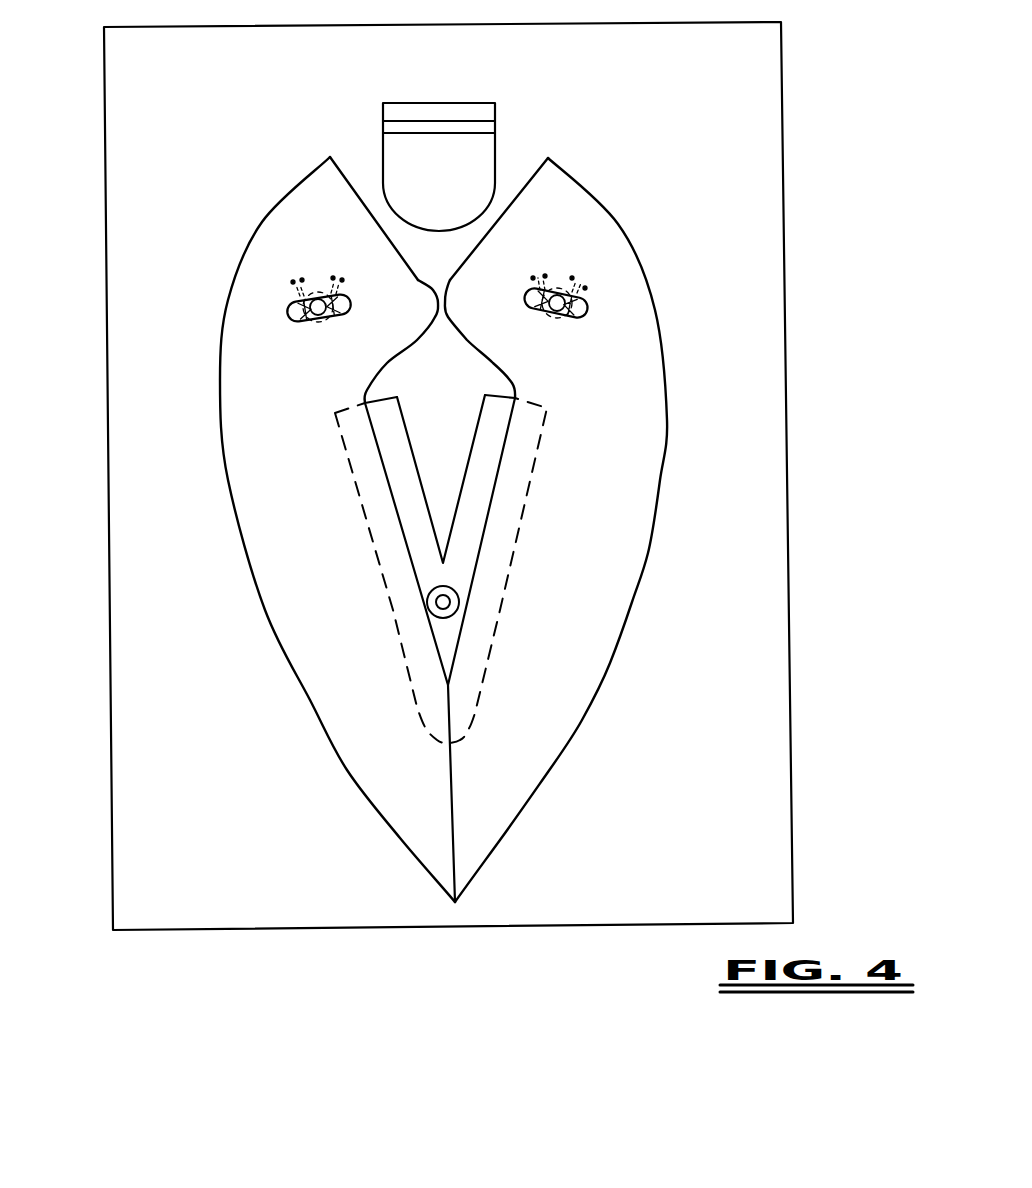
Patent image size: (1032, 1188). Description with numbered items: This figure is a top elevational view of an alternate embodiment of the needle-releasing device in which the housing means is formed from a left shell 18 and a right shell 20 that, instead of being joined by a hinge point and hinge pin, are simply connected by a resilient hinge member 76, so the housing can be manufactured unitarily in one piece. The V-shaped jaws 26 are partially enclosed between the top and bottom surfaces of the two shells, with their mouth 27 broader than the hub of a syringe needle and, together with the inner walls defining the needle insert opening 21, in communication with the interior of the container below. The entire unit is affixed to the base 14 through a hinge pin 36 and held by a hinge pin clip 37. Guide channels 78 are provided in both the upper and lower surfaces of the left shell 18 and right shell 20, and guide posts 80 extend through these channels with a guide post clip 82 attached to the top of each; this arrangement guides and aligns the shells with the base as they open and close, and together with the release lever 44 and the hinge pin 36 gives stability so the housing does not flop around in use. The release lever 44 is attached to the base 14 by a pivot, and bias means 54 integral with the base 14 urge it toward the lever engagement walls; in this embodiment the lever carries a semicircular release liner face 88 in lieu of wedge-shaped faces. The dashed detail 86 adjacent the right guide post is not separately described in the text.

The base 14 is at (133, 63).
The bias means 54 is at (428, 110).
The release lever 44 is at (518, 115).
The semicircular release liner face 88 is at (427, 195).
The left shell 18 is at (365, 760).
The right shell 20 is at (498, 820).
The needle insert opening 21 is at (438, 386).
The jaws 26 is at (462, 555).
The mouth 27 is at (442, 469).
The hinge pin 36 is at (450, 602).
The hinge pin clip 37 is at (448, 613).
The resilient hinge member 76 is at (450, 767).
The guide posts 80 is at (297, 302).
The guide post clip 82 is at (316, 295).
The guide channels 78 is at (587, 305).
The right fastener snap 86 is at (582, 278).